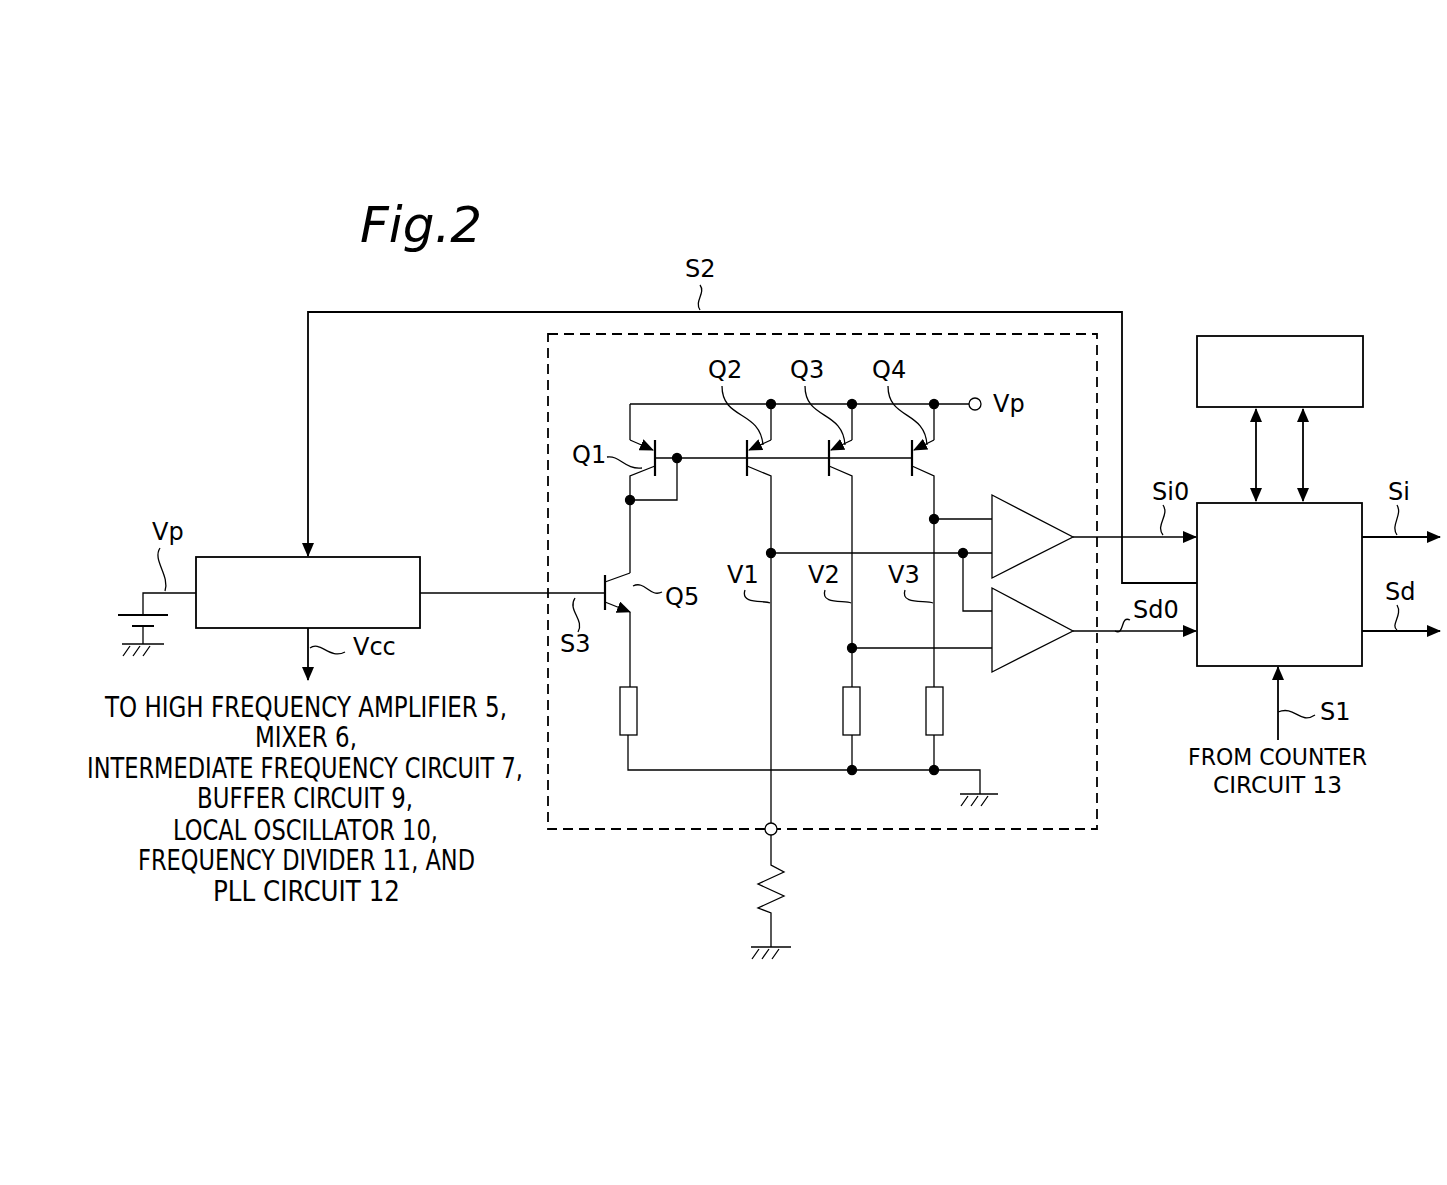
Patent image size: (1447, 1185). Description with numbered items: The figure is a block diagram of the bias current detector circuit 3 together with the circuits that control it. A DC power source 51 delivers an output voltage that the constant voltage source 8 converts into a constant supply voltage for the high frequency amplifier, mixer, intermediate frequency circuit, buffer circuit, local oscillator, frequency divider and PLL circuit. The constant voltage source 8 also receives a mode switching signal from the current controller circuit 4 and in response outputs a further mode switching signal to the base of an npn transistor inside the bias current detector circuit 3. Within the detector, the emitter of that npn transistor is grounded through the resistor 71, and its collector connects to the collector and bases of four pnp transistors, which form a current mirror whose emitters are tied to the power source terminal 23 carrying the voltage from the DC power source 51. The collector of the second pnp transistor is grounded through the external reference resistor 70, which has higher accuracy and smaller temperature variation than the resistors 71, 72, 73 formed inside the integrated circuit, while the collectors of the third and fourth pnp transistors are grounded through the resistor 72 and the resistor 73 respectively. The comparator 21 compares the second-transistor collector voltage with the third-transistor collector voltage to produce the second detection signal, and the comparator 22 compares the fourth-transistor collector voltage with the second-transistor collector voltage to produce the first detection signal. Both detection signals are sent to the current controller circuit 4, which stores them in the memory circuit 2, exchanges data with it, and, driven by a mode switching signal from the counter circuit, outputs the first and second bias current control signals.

The memory circuit 2 is at (1283, 336).
The bias current detector circuit 3 is at (935, 829).
The current controller circuit 4 is at (1222, 502).
The constant voltage source 8 is at (365, 557).
The comparator 21 is at (1037, 651).
The comparator 22 is at (1040, 518).
The power source terminal 23 is at (976, 398).
The DC power source 51 is at (130, 613).
The reference resistor 70 is at (778, 882).
The resistor 71 is at (619, 712).
The resistor 72 is at (842, 712).
The resistor 73 is at (925, 712).